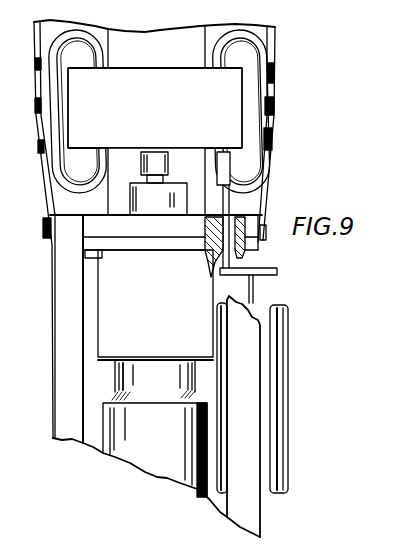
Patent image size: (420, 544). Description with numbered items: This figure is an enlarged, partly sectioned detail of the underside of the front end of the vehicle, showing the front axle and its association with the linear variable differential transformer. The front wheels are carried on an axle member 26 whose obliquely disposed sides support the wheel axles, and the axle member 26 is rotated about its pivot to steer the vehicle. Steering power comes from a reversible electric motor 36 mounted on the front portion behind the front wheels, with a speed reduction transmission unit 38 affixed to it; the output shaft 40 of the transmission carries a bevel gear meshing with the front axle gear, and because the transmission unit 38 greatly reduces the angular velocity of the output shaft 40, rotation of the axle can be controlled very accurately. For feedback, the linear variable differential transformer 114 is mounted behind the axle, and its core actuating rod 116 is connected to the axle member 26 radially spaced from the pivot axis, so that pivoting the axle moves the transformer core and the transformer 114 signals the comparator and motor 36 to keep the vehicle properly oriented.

The axle member 26 is at (140, 124).
The output shaft 40 is at (167, 165).
The speed reduction transmission unit 38 is at (172, 312).
The electric motor 36 is at (170, 453).
The core actuating rod 116 is at (277, 276).
The linear variable differential transformer 114 is at (283, 410).